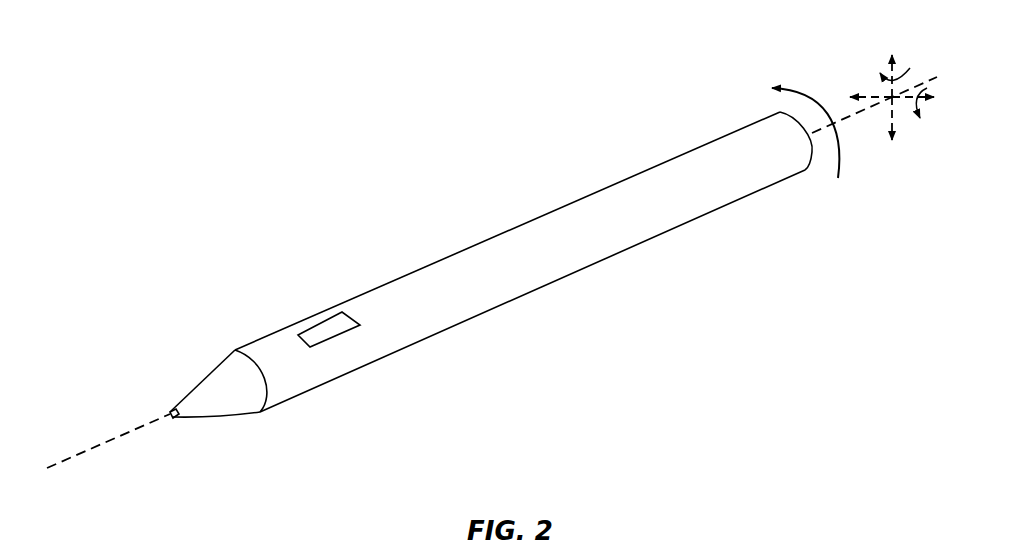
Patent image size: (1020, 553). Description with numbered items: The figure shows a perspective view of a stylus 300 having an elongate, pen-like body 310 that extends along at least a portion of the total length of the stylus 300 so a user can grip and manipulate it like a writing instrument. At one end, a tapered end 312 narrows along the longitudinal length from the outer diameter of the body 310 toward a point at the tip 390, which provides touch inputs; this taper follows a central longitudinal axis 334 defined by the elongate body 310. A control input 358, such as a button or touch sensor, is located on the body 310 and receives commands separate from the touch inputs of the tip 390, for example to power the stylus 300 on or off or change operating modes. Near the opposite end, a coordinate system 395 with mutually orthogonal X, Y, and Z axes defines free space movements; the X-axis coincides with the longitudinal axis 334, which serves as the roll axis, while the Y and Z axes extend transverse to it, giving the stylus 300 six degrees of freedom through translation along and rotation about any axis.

The stylus 300 is at (315, 186).
The body 310 is at (500, 232).
The tapered end 312 is at (228, 376).
The longitudinal axis 334 is at (98, 447).
The control input 358 is at (308, 334).
The tip 390 is at (170, 411).
The coordinate system 395 is at (856, 61).